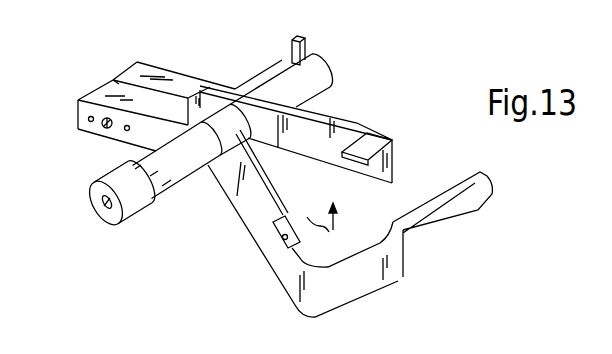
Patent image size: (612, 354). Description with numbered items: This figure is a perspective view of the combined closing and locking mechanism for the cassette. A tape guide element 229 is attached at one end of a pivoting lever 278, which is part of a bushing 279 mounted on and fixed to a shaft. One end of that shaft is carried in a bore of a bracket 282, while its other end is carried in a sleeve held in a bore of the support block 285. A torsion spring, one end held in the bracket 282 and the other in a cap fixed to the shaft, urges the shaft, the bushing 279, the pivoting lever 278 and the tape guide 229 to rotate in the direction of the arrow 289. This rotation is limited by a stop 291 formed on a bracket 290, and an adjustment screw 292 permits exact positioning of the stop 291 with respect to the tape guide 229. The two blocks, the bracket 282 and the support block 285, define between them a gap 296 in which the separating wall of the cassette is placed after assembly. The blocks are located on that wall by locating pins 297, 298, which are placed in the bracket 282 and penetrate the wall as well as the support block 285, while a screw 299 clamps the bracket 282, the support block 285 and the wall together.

The tape guide element 229 is at (427, 226).
The pivoting lever 278 is at (288, 284).
The bushing 279 is at (227, 108).
The bracket 282 is at (163, 185).
The support block 285 is at (156, 80).
The arrow 289 is at (312, 210).
The bracket 290 is at (327, 133).
The stop 291 is at (371, 143).
The adjustment screw 292 is at (283, 239).
The gap 296 is at (123, 84).
The locating pin 297 is at (88, 121).
The locating pin 298 is at (125, 133).
The screw 299 is at (107, 130).